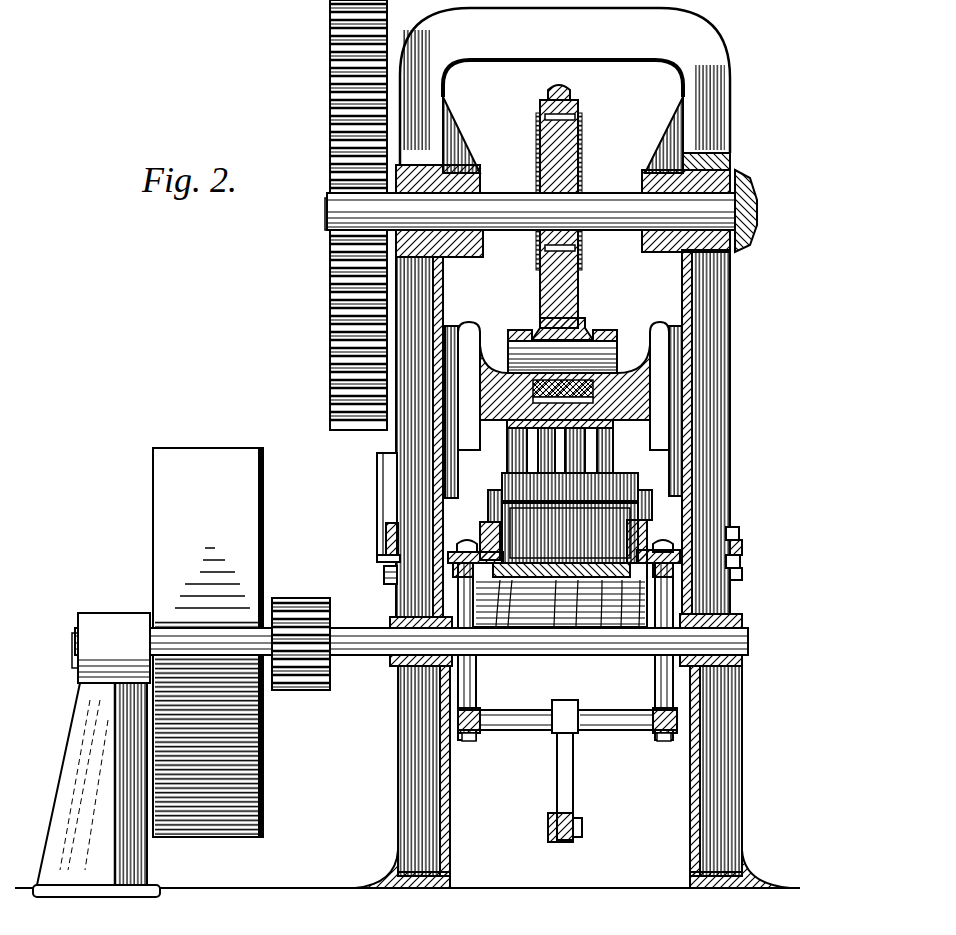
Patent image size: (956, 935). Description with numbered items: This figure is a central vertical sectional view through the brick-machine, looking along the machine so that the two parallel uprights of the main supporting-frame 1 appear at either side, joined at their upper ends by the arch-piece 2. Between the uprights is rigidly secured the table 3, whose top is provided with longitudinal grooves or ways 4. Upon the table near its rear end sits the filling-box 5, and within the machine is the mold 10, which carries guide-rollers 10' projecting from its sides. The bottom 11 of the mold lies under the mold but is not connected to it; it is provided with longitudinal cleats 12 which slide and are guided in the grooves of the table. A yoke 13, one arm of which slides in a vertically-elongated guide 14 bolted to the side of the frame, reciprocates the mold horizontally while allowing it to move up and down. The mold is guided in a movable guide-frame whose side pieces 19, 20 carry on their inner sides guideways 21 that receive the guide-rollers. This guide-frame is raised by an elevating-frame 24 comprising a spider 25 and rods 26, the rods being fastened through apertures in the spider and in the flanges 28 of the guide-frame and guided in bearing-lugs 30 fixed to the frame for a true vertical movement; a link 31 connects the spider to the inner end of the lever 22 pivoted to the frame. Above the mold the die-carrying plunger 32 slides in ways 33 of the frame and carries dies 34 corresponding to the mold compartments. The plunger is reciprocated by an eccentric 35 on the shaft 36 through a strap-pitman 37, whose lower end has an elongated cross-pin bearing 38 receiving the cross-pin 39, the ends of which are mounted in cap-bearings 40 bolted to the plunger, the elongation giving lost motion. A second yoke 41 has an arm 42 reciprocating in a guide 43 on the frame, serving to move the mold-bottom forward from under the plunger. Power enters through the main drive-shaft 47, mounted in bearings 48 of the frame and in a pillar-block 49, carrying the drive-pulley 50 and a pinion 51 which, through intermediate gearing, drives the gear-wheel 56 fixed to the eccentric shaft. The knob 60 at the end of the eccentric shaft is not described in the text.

The main supporting-frame 1 is at (415, 419).
The arch-piece 2 is at (527, 42).
The table 3 is at (530, 620).
The longitudinal grooves or ways 4 is at (496, 626).
The filling-box 5 is at (596, 485).
The mold 10 is at (587, 517).
The guide-rollers 10' is at (575, 497).
The bottom of the mold 11 is at (554, 626).
The longitudinal cleats 12 is at (508, 626).
The yoke 13 is at (386, 538).
The vertically-elongated guide 14 is at (380, 516).
The side piece 19 is at (486, 532).
The side piece 20 is at (639, 626).
The guideways 21 is at (642, 538).
The lever 22 is at (548, 831).
The elevating-frame 24 is at (567, 729).
The spider 25 is at (536, 722).
The rods 26 is at (478, 699).
The flanges 28 is at (380, 558).
The bearing-lugs 30 is at (392, 584).
The link 31 is at (573, 796).
The die-carrying plunger 32 is at (486, 350).
The ways 33 is at (458, 325).
The dies 34 is at (522, 457).
The eccentric 35 is at (582, 146).
The shaft 36 is at (505, 203).
The strap-pitman 37 is at (570, 284).
The elongated cross-pin bearing 38 is at (567, 328).
The cross-pin 39 is at (562, 356).
The cap-bearings 40 is at (524, 333).
The yoke 41 is at (621, 626).
The arm 42 is at (742, 562).
The guide 43 is at (742, 574).
The main drive-shaft 47 is at (391, 651).
The bearings 48 is at (396, 668).
The pillar-block 49 is at (96, 741).
The drive-pulley 50 is at (166, 532).
The pinion 51 is at (309, 666).
The gear-wheel 56 is at (332, 274).
The knob 60 is at (763, 211).